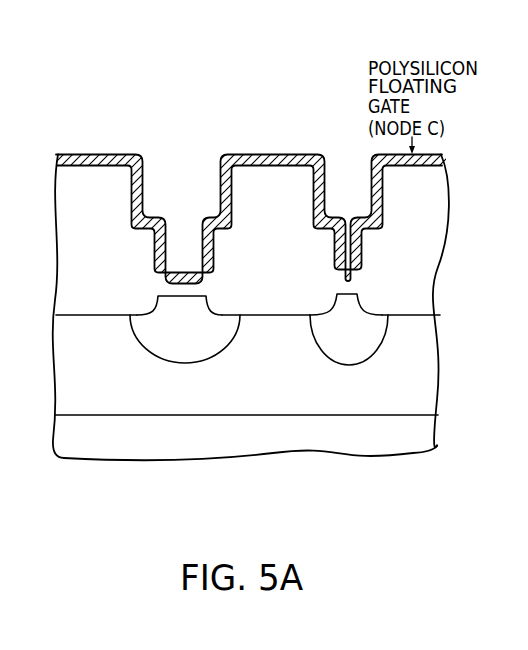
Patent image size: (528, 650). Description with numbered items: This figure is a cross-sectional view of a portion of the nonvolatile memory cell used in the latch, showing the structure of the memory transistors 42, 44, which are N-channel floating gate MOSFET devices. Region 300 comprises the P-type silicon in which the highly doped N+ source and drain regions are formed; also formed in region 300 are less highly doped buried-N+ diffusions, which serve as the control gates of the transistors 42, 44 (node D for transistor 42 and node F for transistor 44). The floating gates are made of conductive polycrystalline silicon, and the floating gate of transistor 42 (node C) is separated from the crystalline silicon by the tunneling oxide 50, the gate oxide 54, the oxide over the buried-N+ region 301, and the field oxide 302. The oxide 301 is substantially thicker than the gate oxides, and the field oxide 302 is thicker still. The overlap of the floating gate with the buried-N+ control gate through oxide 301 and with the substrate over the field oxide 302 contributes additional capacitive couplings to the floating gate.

The P-type silicon region 300 is at (426, 338).
The oxide over the buried-N+ region 301 is at (374, 254).
The field oxide 302 is at (420, 184).
The tunneling oxide 50 is at (335, 283).
The gate oxide 54 is at (164, 292).
The memory transistor 42 is at (150, 355).
The memory transistor 44 is at (329, 352).